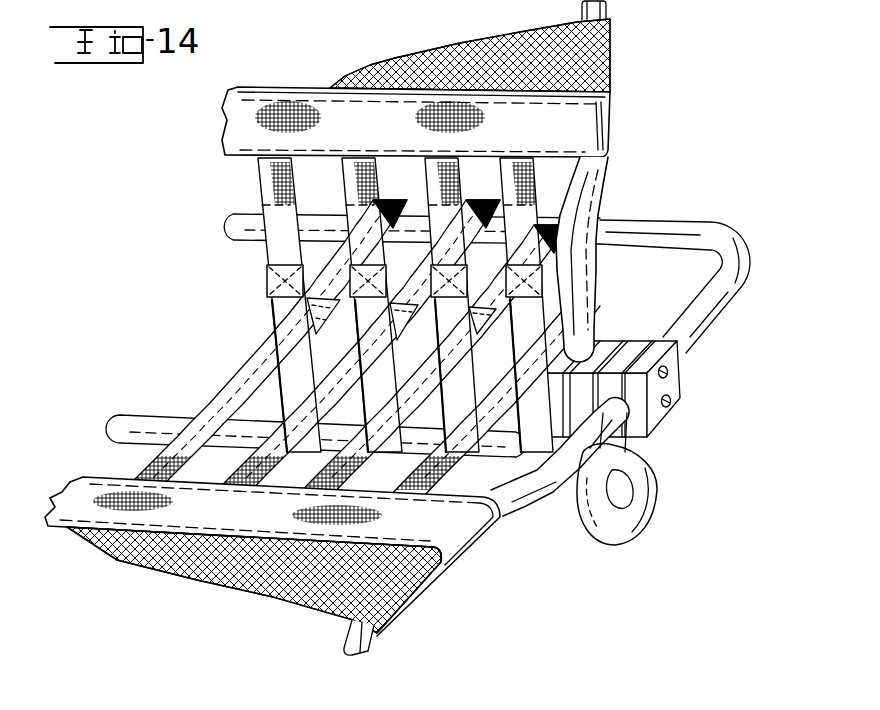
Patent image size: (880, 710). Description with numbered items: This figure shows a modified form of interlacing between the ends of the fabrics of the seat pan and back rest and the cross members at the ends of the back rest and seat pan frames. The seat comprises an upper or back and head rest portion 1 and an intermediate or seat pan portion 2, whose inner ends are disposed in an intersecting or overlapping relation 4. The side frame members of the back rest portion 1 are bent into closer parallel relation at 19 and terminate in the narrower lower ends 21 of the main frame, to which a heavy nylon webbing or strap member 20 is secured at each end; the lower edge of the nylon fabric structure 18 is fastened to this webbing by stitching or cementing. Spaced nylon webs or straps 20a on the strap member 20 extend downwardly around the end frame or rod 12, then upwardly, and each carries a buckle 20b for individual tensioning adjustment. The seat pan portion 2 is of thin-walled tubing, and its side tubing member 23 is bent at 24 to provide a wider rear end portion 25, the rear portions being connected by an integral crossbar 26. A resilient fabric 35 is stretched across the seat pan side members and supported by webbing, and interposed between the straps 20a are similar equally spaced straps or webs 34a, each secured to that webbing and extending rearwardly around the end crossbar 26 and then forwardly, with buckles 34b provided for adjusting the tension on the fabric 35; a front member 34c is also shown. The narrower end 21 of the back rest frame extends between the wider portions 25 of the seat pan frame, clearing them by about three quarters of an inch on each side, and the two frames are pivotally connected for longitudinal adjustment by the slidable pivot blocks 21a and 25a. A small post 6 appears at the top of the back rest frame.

The upper or back and head rest portion 1 is at (624, 83).
The intermediate or seat pan portion 2 is at (619, 548).
The intersecting or overlapping relation 4 is at (663, 472).
The post 6 is at (607, 7).
The end frame or rod 12 is at (502, 456).
The nylon fabric structure 18 is at (578, 62).
The lower end portions of the side frame members 19 is at (597, 172).
The webbing or strap member 20 is at (230, 122).
The nylon webs or straps 20a is at (352, 172).
The buckle 20b is at (583, 220).
The lower ends of the main frame 21 is at (577, 193).
The slidable pivot block 21a is at (597, 347).
The side tubing member 23 is at (375, 638).
The bend 24 is at (543, 493).
The wider rear end portion 25 is at (716, 308).
The slidable pivot block 25a is at (660, 413).
The integral crossbar 26 is at (673, 230).
The straps or webs 34a is at (242, 378).
The buckle 34b is at (313, 303).
The front rail 34c is at (77, 500).
The resilient fabric 35 is at (200, 562).